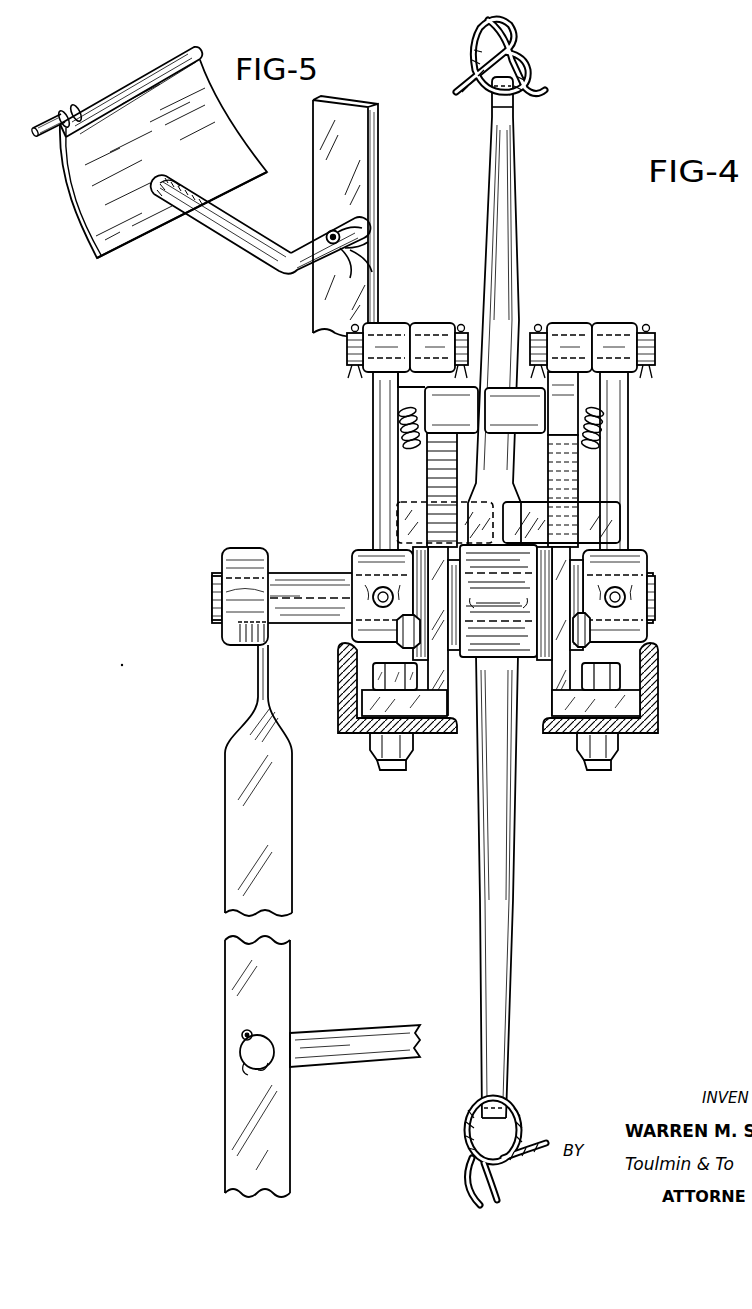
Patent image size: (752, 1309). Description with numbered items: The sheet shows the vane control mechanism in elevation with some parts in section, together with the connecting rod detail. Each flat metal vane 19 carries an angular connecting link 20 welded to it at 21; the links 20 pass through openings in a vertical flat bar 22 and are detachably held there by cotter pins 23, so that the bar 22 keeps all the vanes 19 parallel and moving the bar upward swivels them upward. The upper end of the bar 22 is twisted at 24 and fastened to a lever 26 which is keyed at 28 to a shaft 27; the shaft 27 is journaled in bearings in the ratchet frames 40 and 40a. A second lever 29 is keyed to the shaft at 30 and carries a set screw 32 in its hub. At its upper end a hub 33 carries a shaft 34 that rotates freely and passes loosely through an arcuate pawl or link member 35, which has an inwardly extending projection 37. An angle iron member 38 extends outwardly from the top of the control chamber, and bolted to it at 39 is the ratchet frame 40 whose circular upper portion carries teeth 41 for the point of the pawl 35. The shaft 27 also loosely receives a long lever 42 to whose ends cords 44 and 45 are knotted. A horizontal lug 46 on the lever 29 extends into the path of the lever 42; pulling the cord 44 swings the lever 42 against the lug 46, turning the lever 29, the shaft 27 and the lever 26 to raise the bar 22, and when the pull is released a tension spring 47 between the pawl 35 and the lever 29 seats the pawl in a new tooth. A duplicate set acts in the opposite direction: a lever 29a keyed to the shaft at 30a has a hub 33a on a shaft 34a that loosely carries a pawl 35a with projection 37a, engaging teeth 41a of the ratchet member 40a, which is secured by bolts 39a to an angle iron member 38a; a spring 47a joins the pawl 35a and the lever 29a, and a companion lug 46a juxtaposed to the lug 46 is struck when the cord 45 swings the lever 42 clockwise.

In FIG. 5, the vanes 19 is at (140, 207).
In FIG. 5, the angular connecting link 20 is at (230, 232).
In FIG. 4, the angular connecting link 20 is at (345, 1033).
In FIG. 5, the weld 21 is at (212, 183).
In FIG. 5, the vertical flat bar 22 is at (366, 185).
In FIG. 4, the vertical flat bar 22 is at (225, 837).
In FIG. 5, the cotter pin 23 is at (333, 230).
In FIG. 4, the cotter pin 23 is at (242, 1033).
In FIG. 4, the twisted portion 24 is at (258, 707).
In FIG. 4, the lever 26 is at (238, 548).
In FIG. 4, the shaft 27 is at (303, 580).
In FIG. 4, the key 28 is at (212, 588).
In FIG. 4, the second lever 29 is at (385, 472).
In FIG. 4, the lever 29a is at (620, 490).
In FIG. 4, the key 30 is at (362, 585).
In FIG. 4, the key 30a is at (648, 590).
In FIG. 4, the set screw 32 is at (248, 650).
In FIG. 4, the hub 33 is at (367, 372).
In FIG. 4, the hub 33a is at (640, 368).
In FIG. 4, the shaft 34 is at (347, 365).
In FIG. 4, the shaft 34a is at (653, 340).
In FIG. 4, the pawl or link member 35 is at (450, 368).
In FIG. 4, the pawl or link member 35a is at (552, 416).
In FIG. 4, the inwardly extending projection 37 is at (470, 409).
In FIG. 4, the inwardly extending projection 37a is at (512, 432).
In FIG. 4, the angle iron member 38 is at (345, 735).
In FIG. 4, the angle iron member 38a is at (658, 703).
In FIG. 4, the bolt 39 is at (400, 762).
In FIG. 4, the bolts 39a is at (597, 682).
In FIG. 4, the ratchet frame 40 is at (447, 698).
In FIG. 4, the ratchet member 40a is at (553, 715).
In FIG. 4, the teeth 41 is at (440, 475).
In FIG. 4, the teeth 41a is at (578, 496).
In FIG. 4, the long lever 42 is at (519, 265).
In FIG. 4, the cord 44 is at (528, 74).
In FIG. 4, the cord 45 is at (524, 1118).
In FIG. 4, the lug 46 is at (405, 545).
In FIG. 4, the lug 46a is at (590, 520).
In FIG. 4, the tension spring 47 is at (398, 437).
In FIG. 4, the spring 47a is at (602, 436).